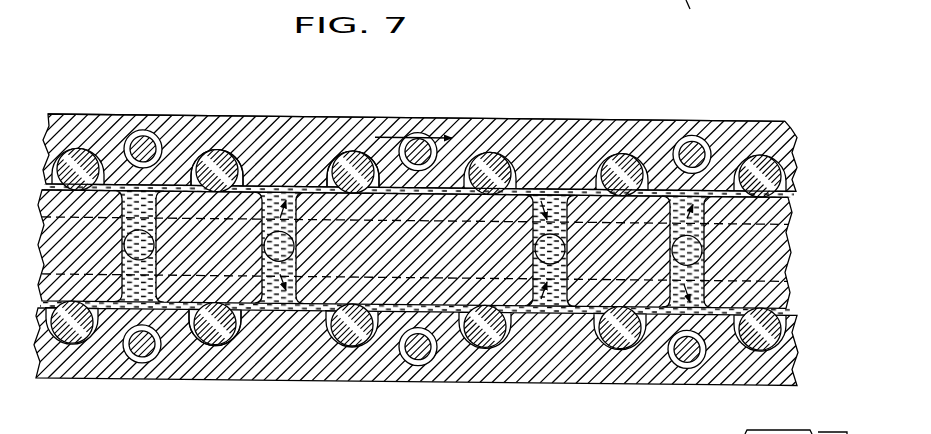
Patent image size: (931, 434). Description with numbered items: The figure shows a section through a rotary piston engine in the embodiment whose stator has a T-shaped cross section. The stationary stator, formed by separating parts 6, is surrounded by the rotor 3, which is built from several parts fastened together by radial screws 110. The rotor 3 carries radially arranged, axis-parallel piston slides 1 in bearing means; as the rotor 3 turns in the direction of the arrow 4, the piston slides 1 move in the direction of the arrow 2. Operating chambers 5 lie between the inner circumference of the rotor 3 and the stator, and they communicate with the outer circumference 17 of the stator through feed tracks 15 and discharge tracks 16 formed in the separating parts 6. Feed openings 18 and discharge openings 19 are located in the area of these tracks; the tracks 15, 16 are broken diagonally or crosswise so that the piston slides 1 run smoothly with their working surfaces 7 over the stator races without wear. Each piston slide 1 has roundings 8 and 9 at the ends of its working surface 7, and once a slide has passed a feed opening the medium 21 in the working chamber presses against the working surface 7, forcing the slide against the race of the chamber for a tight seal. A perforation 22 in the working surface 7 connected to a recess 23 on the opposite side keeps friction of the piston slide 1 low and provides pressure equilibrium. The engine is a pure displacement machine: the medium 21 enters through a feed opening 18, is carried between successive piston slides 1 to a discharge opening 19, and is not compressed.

The piston slides 1 is at (208, 160).
The arrow 2 is at (615, 248).
The rotor 3 is at (257, 148).
The arrow 4 is at (390, 137).
The operating chambers 5 is at (430, 190).
The separating parts 6 is at (148, 117).
The working surface 7 is at (338, 187).
The rounding 8 is at (327, 188).
The rounding 9 is at (360, 153).
The feed tracks 15 is at (308, 200).
The discharge tracks 16 is at (548, 205).
The outer circumference of the stator 17 is at (222, 183).
The feed openings 18 is at (288, 300).
The discharge openings 19 is at (551, 298).
The medium 21 is at (420, 310).
The perforation 22 is at (216, 348).
The recess 23 is at (232, 347).
The radial screws 110 is at (688, 133).